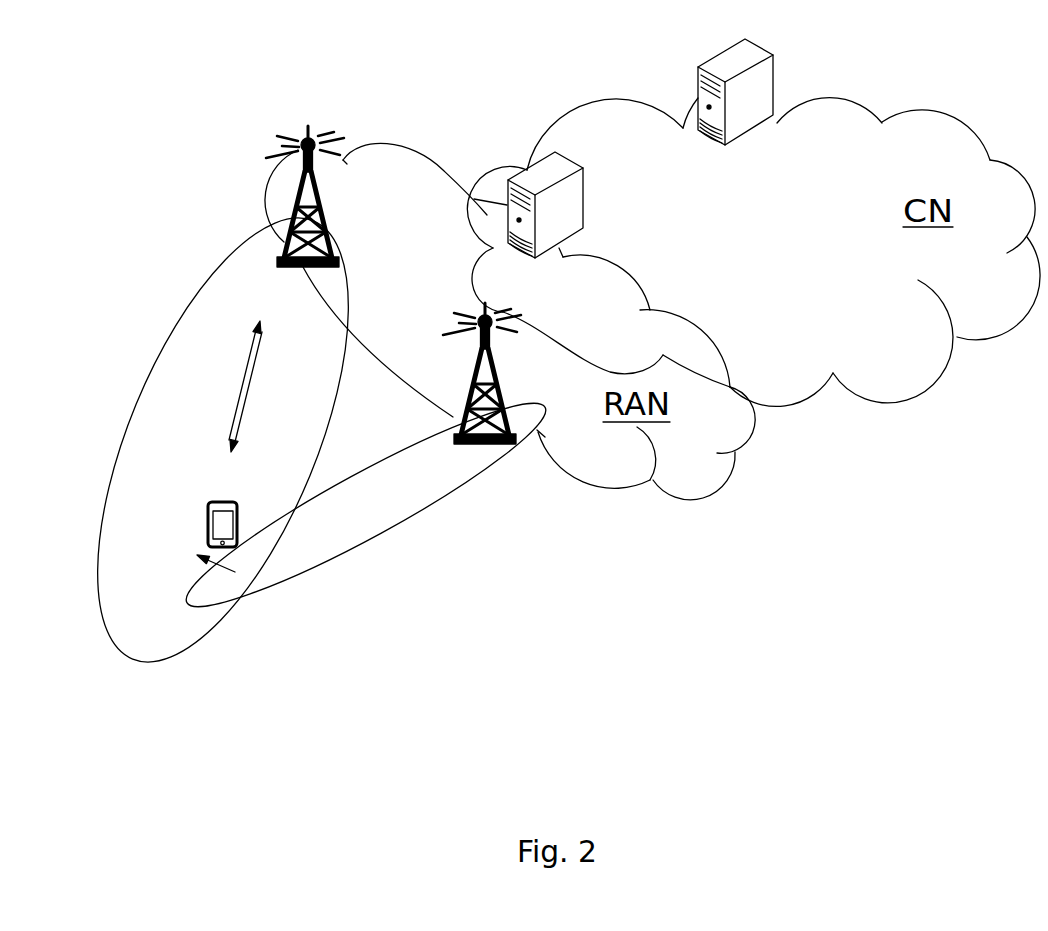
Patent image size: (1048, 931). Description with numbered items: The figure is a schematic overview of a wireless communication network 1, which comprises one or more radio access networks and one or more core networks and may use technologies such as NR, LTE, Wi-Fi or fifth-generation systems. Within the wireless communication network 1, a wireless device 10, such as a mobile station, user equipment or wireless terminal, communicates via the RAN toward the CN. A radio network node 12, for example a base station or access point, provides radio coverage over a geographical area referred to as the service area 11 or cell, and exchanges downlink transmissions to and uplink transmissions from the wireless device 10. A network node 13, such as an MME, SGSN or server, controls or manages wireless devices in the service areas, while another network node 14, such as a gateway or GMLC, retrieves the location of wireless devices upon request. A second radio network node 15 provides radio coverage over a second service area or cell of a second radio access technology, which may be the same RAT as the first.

The wireless communication network 1 is at (230, 105).
The wireless device 10 is at (209, 505).
The service area 11 is at (164, 602).
The radio network node 12 is at (322, 200).
The network node 13 is at (567, 203).
The another network node 14 is at (757, 90).
The second radio network node 15 is at (497, 386).